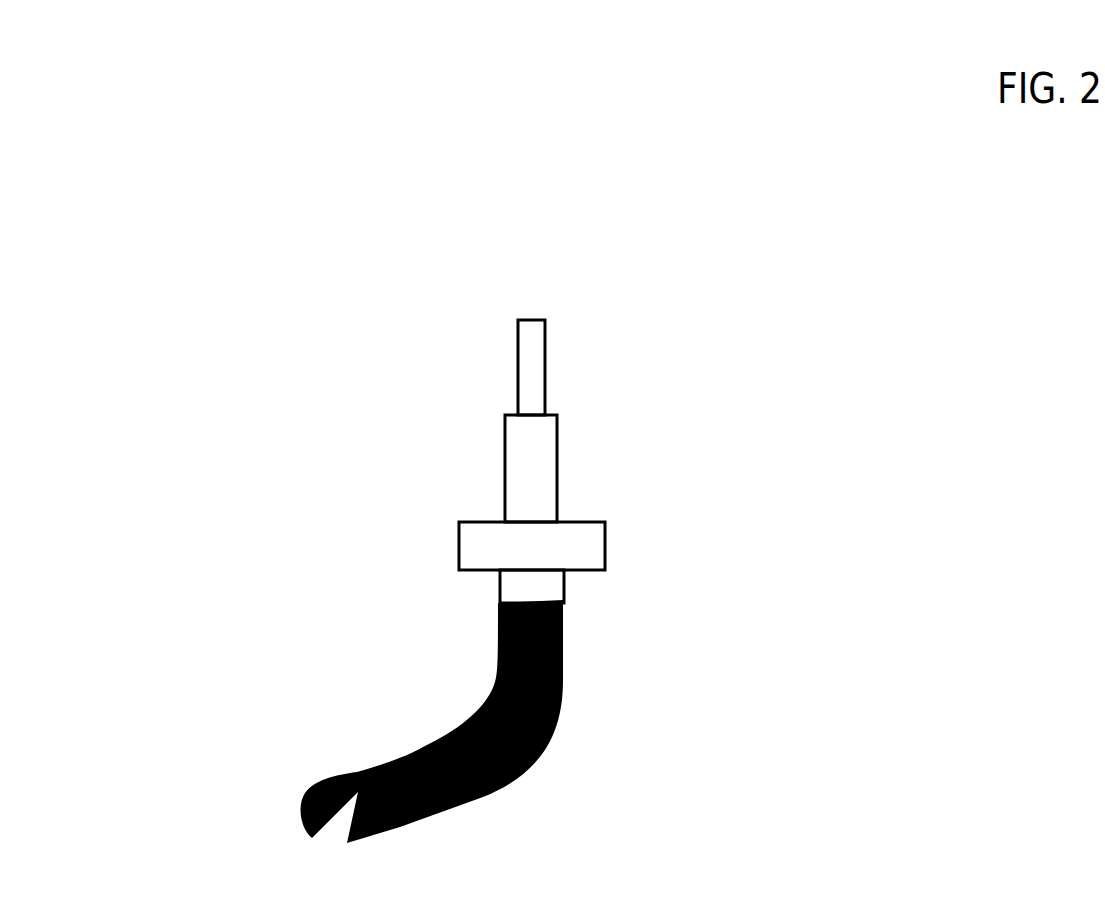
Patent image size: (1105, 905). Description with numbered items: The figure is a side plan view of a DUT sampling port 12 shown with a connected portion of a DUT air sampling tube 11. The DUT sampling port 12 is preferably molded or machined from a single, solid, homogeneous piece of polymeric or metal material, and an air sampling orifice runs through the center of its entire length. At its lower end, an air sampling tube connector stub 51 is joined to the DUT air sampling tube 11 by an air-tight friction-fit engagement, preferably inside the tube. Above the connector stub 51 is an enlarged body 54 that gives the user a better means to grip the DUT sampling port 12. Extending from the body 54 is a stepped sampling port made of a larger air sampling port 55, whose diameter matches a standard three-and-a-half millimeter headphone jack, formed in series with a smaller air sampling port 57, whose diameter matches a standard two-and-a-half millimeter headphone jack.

The DUT air sampling tube 11 is at (353, 768).
The DUT sampling port 12 is at (423, 510).
The air sampling tube connector stub 51 is at (545, 583).
The body 54 is at (557, 549).
The larger air sampling port 55 is at (533, 465).
The smaller air sampling port 57 is at (535, 342).